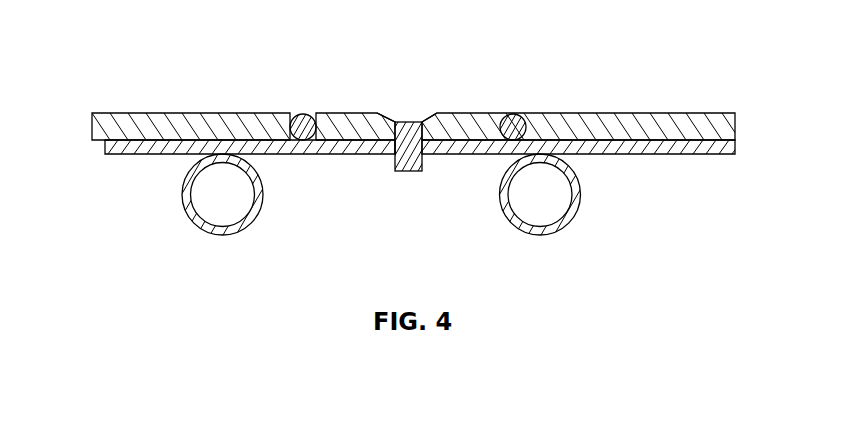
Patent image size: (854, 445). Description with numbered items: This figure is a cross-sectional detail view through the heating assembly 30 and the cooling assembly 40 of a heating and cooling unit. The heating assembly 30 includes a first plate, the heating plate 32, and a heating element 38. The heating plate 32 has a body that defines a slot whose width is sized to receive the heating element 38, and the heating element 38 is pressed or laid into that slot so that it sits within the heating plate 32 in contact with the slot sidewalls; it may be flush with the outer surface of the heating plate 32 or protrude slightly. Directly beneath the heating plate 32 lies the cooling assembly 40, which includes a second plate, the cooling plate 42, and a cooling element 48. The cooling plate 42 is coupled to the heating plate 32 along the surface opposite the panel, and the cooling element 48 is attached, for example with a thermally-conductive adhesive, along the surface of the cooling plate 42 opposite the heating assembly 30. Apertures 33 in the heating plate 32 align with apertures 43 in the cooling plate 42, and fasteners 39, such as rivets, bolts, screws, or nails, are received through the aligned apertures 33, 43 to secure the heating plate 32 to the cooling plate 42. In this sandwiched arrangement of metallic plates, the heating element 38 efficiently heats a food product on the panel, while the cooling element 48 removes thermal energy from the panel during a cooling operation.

The heating assembly 30 is at (158, 33).
The cooling assembly 40 is at (117, 21).
The heating plate 32 is at (675, 122).
The apertures 33 is at (423, 133).
The heating element 38 is at (303, 114).
The fasteners 39 is at (402, 122).
The cooling plate 42 is at (708, 148).
The apertures 43 is at (394, 148).
The cooling element 48 is at (533, 228).